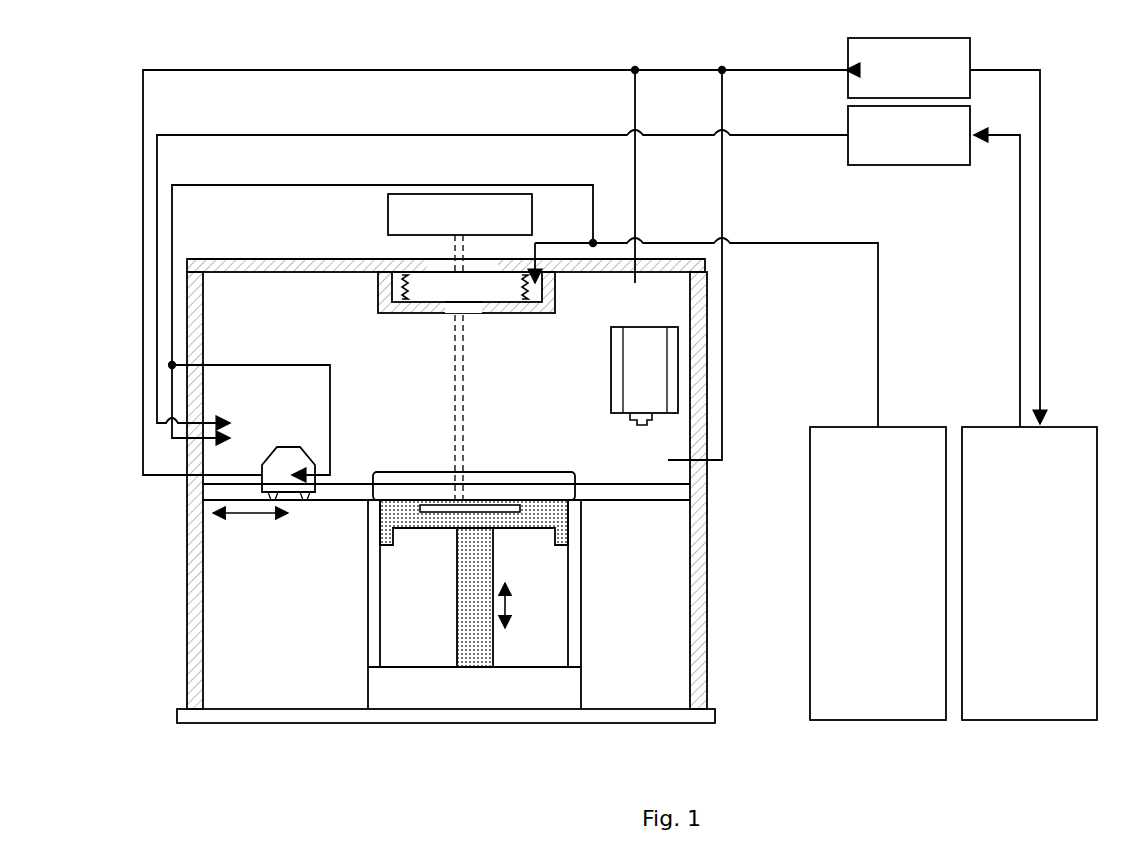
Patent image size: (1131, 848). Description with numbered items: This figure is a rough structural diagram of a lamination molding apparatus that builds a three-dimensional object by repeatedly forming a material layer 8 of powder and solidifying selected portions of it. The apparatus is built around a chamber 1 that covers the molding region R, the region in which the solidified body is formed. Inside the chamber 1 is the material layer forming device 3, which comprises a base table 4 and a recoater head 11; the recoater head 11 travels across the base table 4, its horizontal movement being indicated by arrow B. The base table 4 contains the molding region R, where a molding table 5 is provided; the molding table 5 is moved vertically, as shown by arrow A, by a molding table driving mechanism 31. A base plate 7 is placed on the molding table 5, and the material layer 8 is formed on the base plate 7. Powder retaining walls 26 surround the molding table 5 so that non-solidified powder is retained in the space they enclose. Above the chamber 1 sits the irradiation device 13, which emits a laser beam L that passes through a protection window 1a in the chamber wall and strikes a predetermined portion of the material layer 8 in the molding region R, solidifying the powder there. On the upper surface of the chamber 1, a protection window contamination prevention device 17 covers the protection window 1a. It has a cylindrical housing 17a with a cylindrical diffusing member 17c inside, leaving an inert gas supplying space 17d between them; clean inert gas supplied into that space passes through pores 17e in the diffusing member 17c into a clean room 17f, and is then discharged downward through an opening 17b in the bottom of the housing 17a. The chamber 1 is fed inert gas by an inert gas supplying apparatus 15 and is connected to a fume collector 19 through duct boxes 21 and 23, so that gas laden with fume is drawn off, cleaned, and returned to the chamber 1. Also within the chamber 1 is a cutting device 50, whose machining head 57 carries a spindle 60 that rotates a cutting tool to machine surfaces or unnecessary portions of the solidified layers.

The chamber 1 is at (312, 258).
The protection window 1a is at (440, 263).
The material layer forming device 3 is at (384, 456).
The base table 4 is at (337, 496).
The molding table 5 is at (537, 530).
The base plate 7 is at (430, 530).
The material layer 8 is at (522, 507).
The recoater head 11 is at (293, 446).
The irradiation device 13 is at (533, 222).
The inert gas supplying apparatus 15 is at (902, 427).
The protection window contamination prevention device 17 is at (469, 302).
The housing 17a is at (378, 286).
The opening 17b is at (452, 318).
The diffusing member 17c is at (522, 292).
The inert gas supplying space 17d is at (548, 288).
The pores 17e is at (404, 294).
The clean room 17f is at (496, 299).
The fume collector 19 is at (1060, 427).
The duct box 21 is at (972, 52).
The duct box 23 is at (972, 120).
The powder retaining walls 26 is at (368, 598).
The molding table driving mechanism 31 is at (456, 612).
The cutting device 50 is at (619, 389).
The machining head 57 is at (630, 334).
The spindle 60 is at (625, 418).
The laser beam L is at (445, 368).
The molding region R is at (474, 472).
The arrow A is at (516, 605).
The arrow B is at (250, 527).